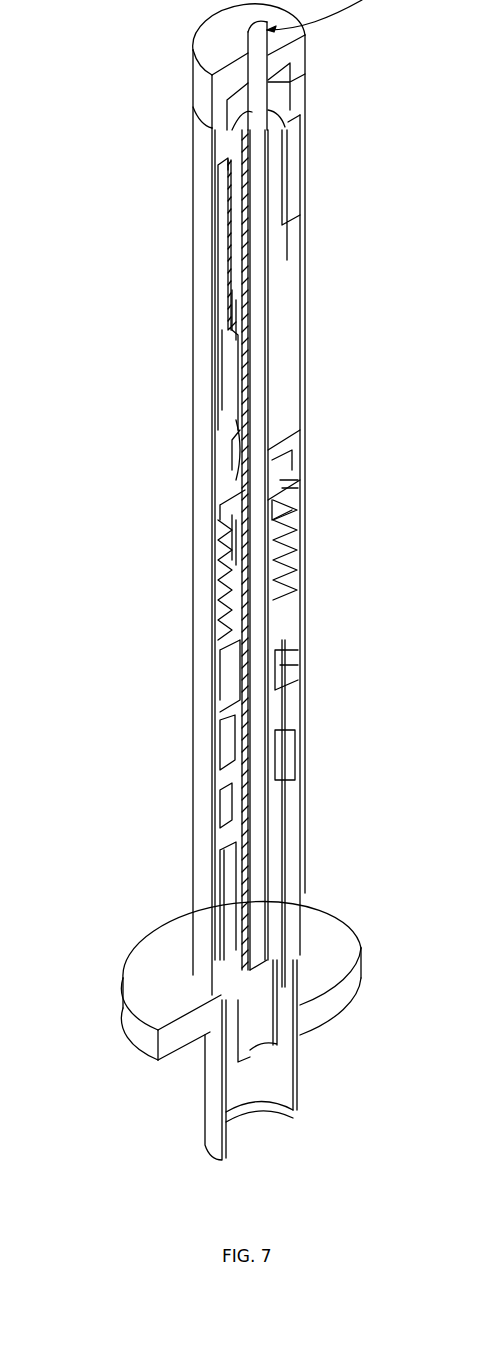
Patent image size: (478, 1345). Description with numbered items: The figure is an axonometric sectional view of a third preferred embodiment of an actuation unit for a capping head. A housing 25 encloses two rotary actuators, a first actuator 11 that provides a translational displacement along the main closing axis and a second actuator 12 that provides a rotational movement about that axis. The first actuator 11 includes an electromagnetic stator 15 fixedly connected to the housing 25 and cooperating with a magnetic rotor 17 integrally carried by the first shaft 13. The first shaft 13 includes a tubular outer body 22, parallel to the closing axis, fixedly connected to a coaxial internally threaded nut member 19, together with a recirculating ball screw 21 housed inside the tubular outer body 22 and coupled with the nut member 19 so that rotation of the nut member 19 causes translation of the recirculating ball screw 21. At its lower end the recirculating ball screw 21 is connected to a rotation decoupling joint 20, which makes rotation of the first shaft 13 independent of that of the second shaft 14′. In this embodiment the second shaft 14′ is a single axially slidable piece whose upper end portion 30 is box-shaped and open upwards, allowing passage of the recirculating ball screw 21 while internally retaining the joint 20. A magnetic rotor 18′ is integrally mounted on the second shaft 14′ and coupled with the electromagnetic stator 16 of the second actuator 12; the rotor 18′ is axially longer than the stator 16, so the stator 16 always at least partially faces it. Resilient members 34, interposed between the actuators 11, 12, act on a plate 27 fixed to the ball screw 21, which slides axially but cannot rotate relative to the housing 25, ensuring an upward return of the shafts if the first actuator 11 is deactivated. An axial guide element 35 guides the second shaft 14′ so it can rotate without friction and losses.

The first actuator 11 is at (212, 198).
The second actuator 12 is at (212, 860).
The first shaft 13 is at (90, 445).
The second shaft 14′ is at (215, 735).
The electromagnetic stator 15 is at (218, 237).
The electromagnetic stator 16 is at (215, 895).
The magnetic rotor 17 is at (228, 252).
The magnetic rotor 18′ is at (215, 798).
The nut member 19 is at (232, 345).
The rotation decoupling joint 20 is at (290, 480).
The recirculating ball screw 21 is at (240, 430).
The tubular outer body 22 is at (230, 290).
The housing 25 is at (198, 530).
The plate 27 is at (280, 450).
The upper end portion 30 is at (290, 495).
The resilient members 34 is at (285, 580).
The axial guide element 35 is at (285, 670).